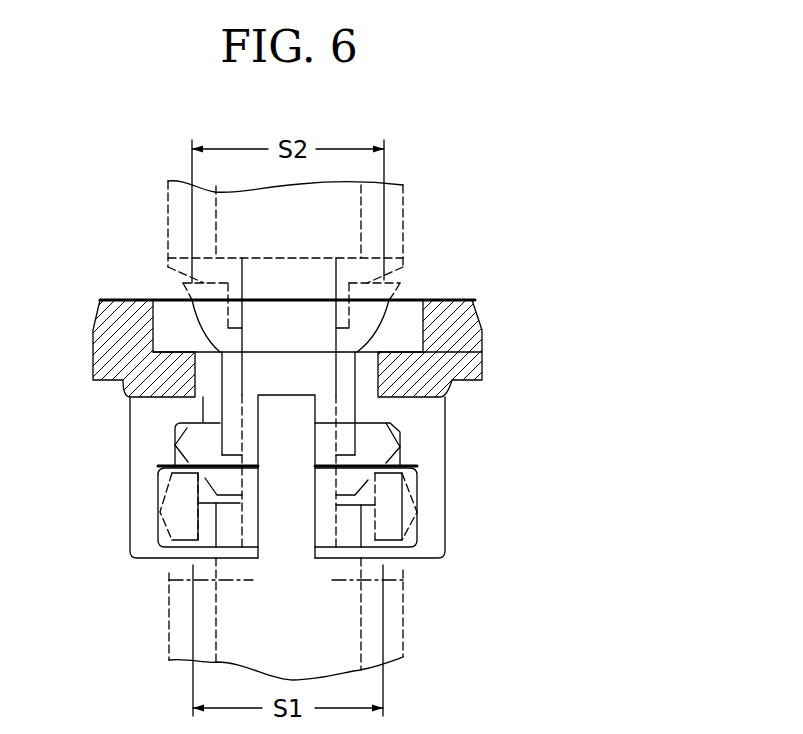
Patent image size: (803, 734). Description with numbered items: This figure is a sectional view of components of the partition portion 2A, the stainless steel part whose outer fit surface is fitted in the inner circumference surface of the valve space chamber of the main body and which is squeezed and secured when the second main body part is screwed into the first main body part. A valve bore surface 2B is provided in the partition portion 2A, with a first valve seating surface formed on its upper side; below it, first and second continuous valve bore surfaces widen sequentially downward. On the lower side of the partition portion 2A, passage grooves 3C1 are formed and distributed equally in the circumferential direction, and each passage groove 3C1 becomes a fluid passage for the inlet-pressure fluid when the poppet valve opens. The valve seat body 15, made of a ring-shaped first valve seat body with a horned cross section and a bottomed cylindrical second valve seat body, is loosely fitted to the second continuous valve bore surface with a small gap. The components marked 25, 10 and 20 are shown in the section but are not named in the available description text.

The bolt 25 is at (403, 247).
The tapered collar 10 is at (390, 328).
The partition portion 2A is at (488, 352).
The valve bore surface 2B is at (203, 410).
The passage groove 3C1 is at (153, 444).
The valve seat body 15 is at (393, 573).
The nut 20 is at (403, 620).